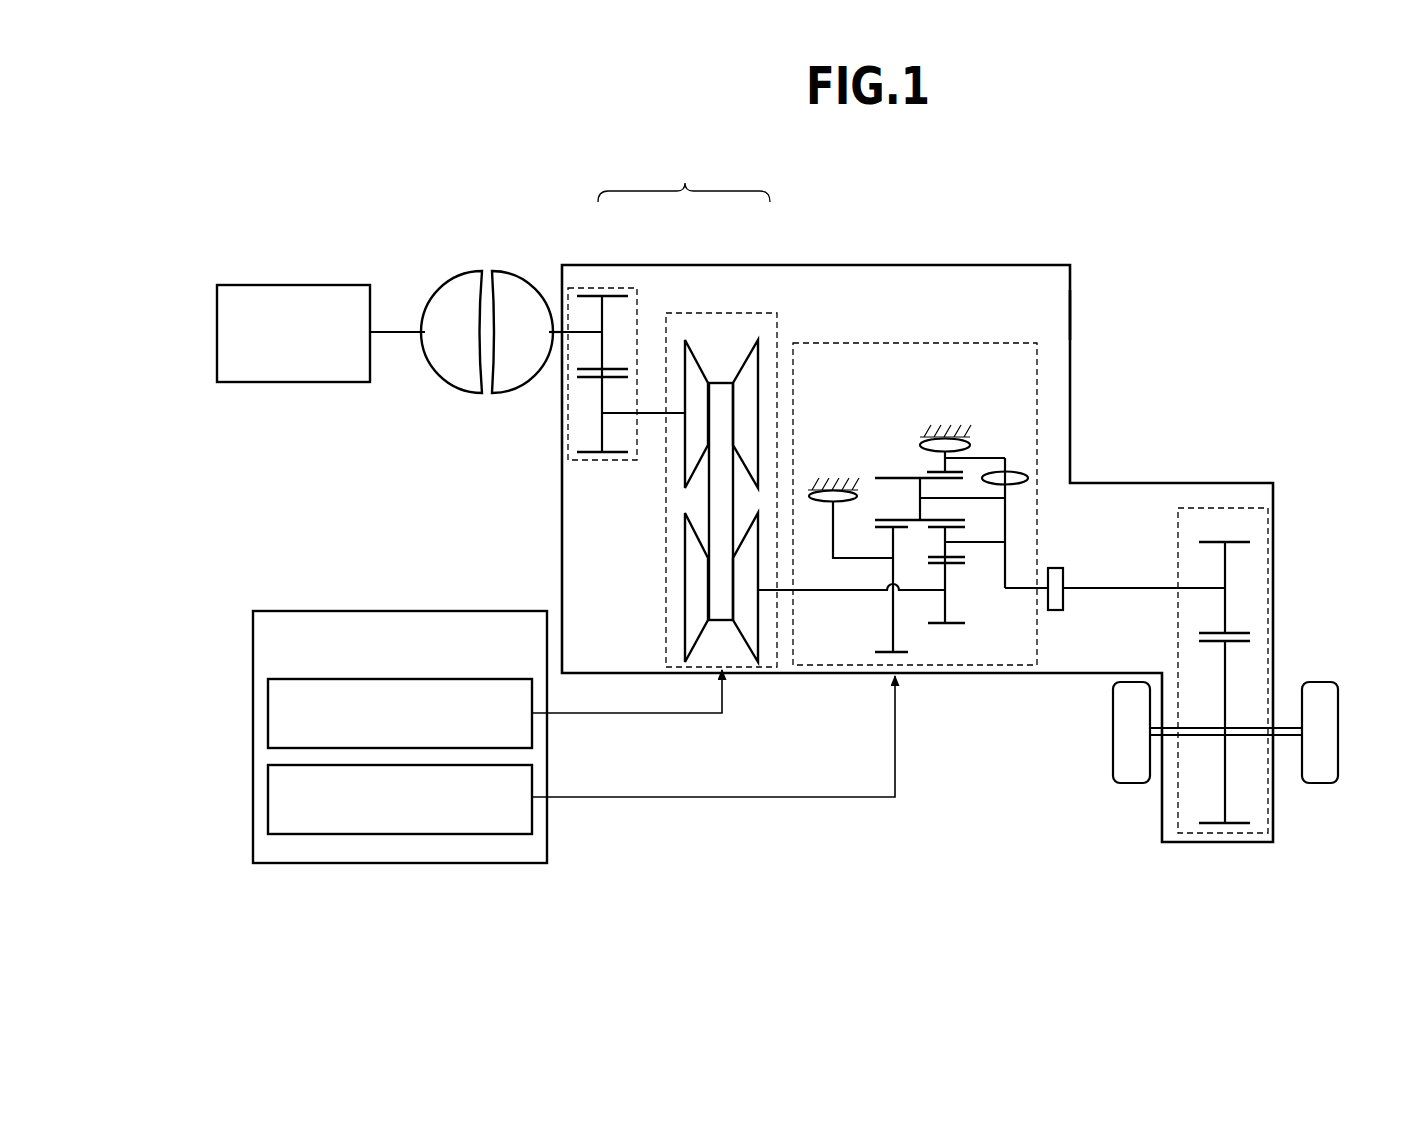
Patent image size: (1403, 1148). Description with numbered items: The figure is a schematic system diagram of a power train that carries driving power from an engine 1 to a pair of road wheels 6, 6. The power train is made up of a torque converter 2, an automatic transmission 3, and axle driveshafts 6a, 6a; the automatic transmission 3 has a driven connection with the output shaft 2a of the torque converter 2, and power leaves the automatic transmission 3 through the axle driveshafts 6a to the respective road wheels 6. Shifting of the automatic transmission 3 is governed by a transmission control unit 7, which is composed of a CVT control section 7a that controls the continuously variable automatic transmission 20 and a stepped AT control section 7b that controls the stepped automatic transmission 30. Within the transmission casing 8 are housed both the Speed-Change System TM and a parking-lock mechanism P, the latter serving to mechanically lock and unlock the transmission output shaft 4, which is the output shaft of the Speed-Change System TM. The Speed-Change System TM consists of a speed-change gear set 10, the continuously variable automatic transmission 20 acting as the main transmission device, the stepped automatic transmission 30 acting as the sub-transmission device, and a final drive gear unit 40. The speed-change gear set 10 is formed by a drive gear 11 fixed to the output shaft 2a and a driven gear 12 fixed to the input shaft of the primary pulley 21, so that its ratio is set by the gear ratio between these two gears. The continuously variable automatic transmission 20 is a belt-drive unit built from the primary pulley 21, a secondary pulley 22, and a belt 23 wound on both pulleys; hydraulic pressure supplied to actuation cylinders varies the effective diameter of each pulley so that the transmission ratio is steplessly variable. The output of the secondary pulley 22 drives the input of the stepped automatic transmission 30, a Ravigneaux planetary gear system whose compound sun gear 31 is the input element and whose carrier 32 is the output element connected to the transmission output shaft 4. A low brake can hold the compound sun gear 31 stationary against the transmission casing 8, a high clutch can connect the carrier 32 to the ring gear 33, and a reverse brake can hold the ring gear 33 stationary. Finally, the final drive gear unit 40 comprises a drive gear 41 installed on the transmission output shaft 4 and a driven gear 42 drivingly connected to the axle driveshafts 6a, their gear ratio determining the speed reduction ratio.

The engine 1 is at (297, 285).
The torque converter 2 is at (447, 284).
The output shaft of torque converter 2a is at (555, 338).
The automatic transmission 3 is at (965, 248).
The transmission output shaft 4 is at (1135, 588).
The road wheels 6 is at (1132, 682).
The axle driveshafts 6a is at (1290, 738).
The transmission control unit 7 is at (425, 611).
The CVT control section 7a is at (268, 709).
The stepped AT control section 7b is at (268, 795).
The transmission casing 8 is at (1070, 313).
The speed-change gear set 10 is at (604, 280).
The drive gear 11 is at (598, 312).
The driven gear 12 is at (602, 432).
The continuously variable automatic transmission 20 is at (694, 305).
The primary pulley 21 is at (700, 366).
The secondary pulley 22 is at (697, 603).
The belt 23 is at (718, 501).
The stepped automatic transmission 30 is at (818, 339).
The compound sun gear 31 is at (918, 630).
The carrier 32 is at (1020, 527).
The ring gear 33 is at (918, 461).
The final drive gear unit 40 is at (1218, 502).
The drive gear 41 is at (1227, 618).
The driven gear 42 is at (1227, 693).
The Speed-Change System TM is at (684, 178).
The parking-lock mechanism P is at (1063, 578).